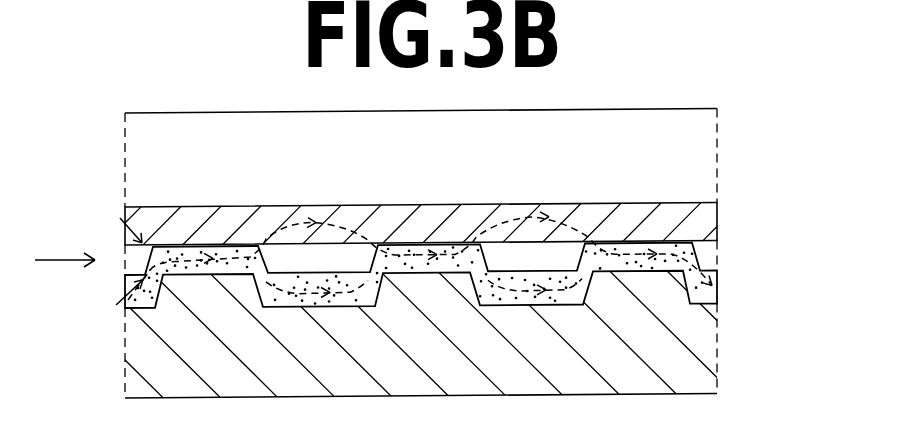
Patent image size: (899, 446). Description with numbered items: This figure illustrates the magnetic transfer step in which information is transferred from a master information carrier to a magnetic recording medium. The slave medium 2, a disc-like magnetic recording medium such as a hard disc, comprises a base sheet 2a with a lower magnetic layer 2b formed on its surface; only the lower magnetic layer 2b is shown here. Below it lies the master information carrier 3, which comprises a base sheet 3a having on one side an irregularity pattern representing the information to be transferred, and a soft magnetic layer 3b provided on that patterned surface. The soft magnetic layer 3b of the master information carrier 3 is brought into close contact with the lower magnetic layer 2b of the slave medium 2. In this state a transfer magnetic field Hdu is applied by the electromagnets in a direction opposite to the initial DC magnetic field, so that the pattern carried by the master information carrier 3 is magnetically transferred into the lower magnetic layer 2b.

The slave medium 2 is at (789, 115).
The base sheet 2a is at (702, 143).
The lower magnetic layer 2b is at (708, 210).
The master information carrier 3 is at (789, 275).
The base sheet 3a is at (707, 358).
The soft magnetic layer 3b is at (718, 295).
The transfer magnetic field Hdu is at (64, 276).